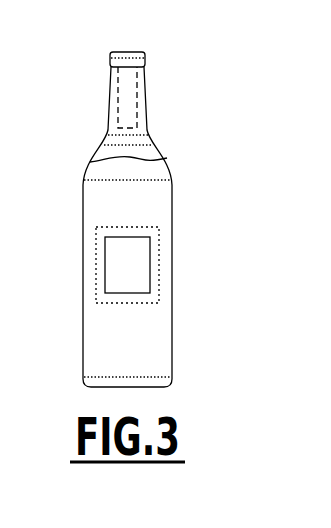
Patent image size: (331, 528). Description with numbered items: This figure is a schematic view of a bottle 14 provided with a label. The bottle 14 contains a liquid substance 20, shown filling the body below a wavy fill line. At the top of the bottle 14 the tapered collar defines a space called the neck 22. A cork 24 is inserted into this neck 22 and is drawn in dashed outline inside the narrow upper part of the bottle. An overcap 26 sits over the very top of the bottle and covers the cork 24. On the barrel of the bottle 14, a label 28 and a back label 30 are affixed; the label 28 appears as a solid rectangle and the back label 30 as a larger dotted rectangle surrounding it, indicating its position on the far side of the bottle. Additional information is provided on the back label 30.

The bottle 14 is at (160, 325).
The liquid substance 20 is at (95, 172).
The neck 22 is at (148, 122).
The cork 24 is at (118, 100).
The overcap 26 is at (145, 98).
The label 28 is at (117, 263).
The back label 30 is at (157, 245).